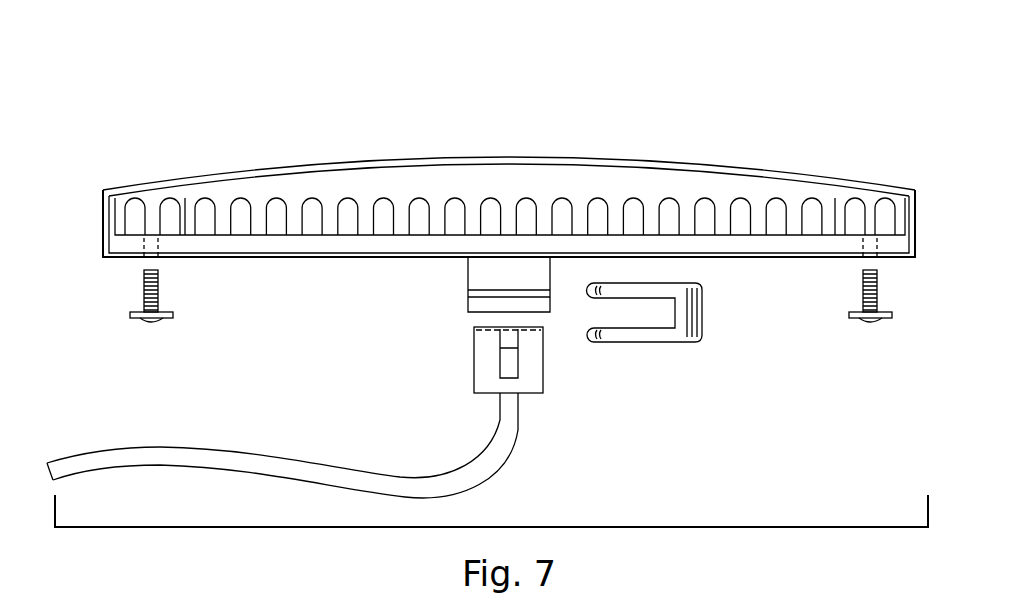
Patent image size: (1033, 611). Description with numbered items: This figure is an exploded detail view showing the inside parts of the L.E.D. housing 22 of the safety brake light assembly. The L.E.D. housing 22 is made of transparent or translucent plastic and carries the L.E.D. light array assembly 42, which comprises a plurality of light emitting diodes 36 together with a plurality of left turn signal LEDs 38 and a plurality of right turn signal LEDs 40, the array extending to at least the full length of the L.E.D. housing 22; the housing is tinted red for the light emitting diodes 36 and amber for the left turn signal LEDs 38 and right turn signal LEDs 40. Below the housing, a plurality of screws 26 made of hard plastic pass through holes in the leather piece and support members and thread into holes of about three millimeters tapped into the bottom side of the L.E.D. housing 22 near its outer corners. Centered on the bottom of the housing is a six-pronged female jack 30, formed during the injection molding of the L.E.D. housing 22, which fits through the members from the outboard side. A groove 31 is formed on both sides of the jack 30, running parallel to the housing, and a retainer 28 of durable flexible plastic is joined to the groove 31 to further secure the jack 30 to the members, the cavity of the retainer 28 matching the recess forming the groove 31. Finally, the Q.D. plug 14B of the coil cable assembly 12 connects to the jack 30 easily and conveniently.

The coil cable assembly 12 is at (156, 446).
The Q.D. plug 14B is at (488, 361).
The L.E.D. housing 22 is at (515, 160).
The screws 26 is at (160, 293).
The retainer 28 is at (640, 335).
The six-pronged female jack 30 is at (478, 278).
The groove 31 is at (477, 295).
The light emitting diodes 36 is at (418, 213).
The left turn signal LEDs 38 is at (855, 140).
The right turn signal LEDs 40 is at (137, 140).
The L.E.D. light array assembly 42 is at (710, 111).